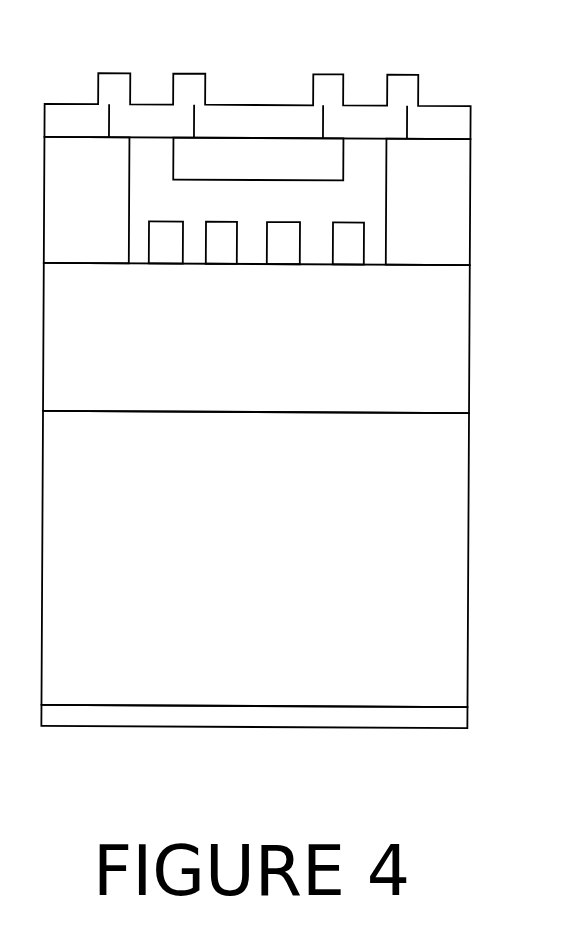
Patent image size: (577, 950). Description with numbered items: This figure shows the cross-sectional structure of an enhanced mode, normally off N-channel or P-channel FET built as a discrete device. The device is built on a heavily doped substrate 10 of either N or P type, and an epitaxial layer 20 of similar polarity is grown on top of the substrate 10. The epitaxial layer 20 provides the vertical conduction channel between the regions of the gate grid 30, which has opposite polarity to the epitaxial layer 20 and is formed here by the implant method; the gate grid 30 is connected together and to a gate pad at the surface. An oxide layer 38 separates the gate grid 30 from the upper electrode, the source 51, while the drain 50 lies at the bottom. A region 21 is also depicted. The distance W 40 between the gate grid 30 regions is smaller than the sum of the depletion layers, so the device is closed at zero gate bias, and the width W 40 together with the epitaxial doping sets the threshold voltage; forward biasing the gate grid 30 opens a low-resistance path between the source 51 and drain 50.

The substrate 10 is at (255, 559).
The epitaxial layer 20 is at (256, 338).
The buried region 21 is at (258, 159).
The gate grid 30 is at (450, 105).
The oxide layer 38 is at (151, 105).
The distance W 40 is at (285, 246).
The drain 50 is at (402, 728).
The source 51 is at (280, 105).